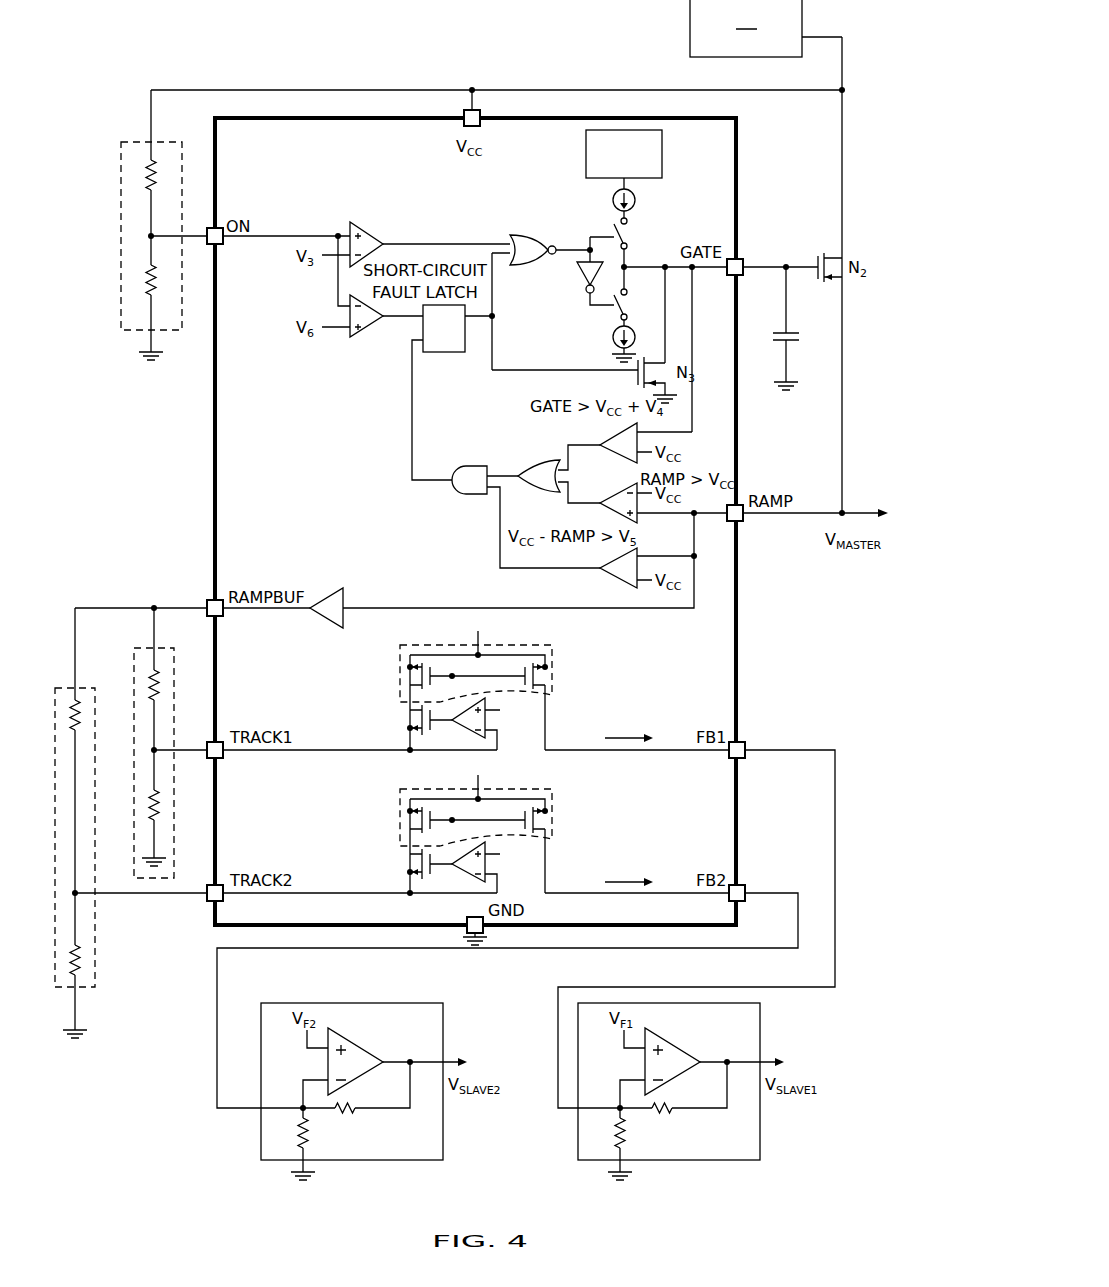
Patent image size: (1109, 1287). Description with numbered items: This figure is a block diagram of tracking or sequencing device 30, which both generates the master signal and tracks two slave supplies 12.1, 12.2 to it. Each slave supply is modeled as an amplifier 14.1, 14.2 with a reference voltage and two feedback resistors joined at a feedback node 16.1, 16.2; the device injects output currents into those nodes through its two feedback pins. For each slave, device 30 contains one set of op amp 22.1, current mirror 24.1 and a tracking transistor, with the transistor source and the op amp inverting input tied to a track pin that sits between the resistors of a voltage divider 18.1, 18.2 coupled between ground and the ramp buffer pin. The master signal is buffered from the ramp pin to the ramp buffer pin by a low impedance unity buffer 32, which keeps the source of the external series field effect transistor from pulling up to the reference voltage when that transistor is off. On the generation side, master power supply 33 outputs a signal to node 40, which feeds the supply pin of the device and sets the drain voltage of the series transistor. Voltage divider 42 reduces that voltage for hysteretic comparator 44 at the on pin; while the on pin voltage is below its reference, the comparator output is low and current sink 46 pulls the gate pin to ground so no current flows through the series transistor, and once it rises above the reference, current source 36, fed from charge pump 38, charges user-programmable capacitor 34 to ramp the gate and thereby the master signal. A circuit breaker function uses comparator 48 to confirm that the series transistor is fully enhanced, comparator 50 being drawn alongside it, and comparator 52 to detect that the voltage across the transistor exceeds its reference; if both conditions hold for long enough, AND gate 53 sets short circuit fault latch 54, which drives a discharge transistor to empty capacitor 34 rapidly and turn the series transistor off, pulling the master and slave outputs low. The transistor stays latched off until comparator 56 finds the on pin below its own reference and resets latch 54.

The tracking or sequencing device 30 is at (213, 450).
The master power supply 33 is at (766, 28).
The node 40 is at (843, 92).
The voltage divider 42 is at (134, 140).
The hysteretic comparator 44 is at (370, 226).
The comparator 56 is at (366, 335).
The short circuit fault latch 54 is at (452, 353).
The charge pump 38 is at (664, 155).
The current source 36 is at (611, 201).
The current sink 46 is at (612, 340).
The comparator 48 is at (616, 455).
The comparator 50 is at (645, 518).
The comparator 52 is at (612, 578).
The AND gate 53 is at (469, 495).
The capacitor 34 is at (803, 337).
The buffer 32 is at (331, 591).
The voltage divider 18.1 is at (150, 645).
The voltage divider 18.2 is at (100, 908).
The current mirror 24.1 is at (556, 666).
The op amp 22.1 is at (487, 727).
The slave supply 12.2 is at (392, 1003).
The slave supply 12.1 is at (709, 1003).
The amplifier 14.2 is at (364, 1044).
The amplifier 14.1 is at (681, 1044).
The feedback node 16.2 is at (291, 1112).
The feedback node 16.1 is at (608, 1112).